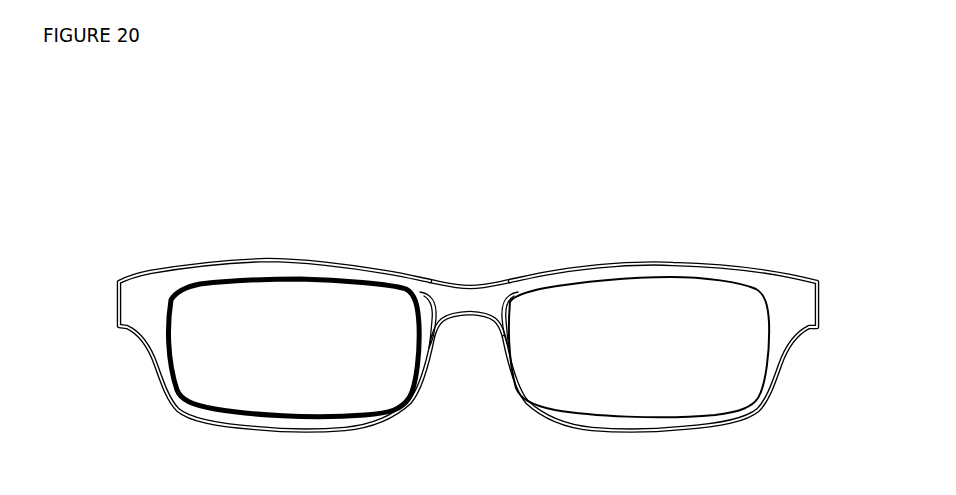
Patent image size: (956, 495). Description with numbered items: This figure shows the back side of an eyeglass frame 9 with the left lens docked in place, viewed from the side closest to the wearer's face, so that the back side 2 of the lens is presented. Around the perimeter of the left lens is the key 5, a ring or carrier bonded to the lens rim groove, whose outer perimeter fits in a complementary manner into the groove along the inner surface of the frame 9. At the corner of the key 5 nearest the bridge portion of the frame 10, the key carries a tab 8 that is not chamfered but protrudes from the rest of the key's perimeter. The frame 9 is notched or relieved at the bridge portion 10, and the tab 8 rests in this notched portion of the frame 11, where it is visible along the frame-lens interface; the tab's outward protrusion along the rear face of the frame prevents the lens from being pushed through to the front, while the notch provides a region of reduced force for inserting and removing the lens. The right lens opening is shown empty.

The back side 2 is at (218, 312).
The key 5 is at (320, 280).
The tab 8 is at (425, 300).
The frame 9 is at (740, 413).
The bridge portion of the frame 10 is at (468, 303).
The notched portion of the frame 11 is at (512, 300).